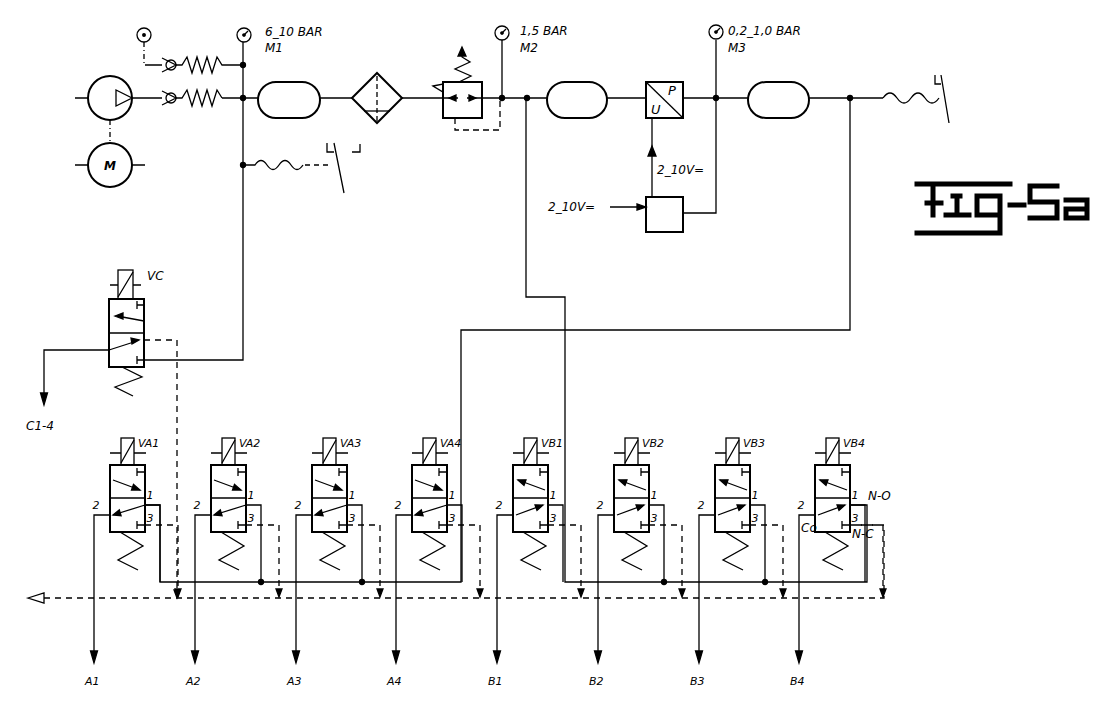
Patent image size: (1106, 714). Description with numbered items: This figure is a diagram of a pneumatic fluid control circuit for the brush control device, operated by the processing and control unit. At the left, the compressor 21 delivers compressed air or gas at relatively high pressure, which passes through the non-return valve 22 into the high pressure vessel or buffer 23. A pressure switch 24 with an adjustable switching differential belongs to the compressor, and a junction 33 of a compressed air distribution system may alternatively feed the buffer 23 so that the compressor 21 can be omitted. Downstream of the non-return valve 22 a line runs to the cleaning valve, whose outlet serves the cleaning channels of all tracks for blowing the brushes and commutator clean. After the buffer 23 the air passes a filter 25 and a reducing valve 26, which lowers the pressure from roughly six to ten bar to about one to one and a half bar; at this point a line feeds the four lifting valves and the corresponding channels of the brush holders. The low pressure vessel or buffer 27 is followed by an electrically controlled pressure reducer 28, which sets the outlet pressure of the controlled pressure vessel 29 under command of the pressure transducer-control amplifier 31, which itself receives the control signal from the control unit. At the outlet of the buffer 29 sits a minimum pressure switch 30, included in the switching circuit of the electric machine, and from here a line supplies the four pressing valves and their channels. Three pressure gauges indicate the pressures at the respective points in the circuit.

The compressor 21 is at (124, 112).
The non-return valve 22 is at (204, 107).
The high pressure vessel or buffer 23 is at (293, 90).
The pressure switch 24 is at (290, 172).
The filter 25 is at (392, 112).
The reducing valve 26 is at (452, 118).
The low pressure vessel or buffer 27 is at (573, 90).
The electrically controlled pressure reducer 28 is at (662, 82).
The controlled pressure vessel 29 is at (777, 88).
The minimum pressure switch 30 is at (962, 77).
The pressure transducer-control amplifier 31 is at (665, 232).
The junction of a compressed air distribution system 33 is at (151, 32).